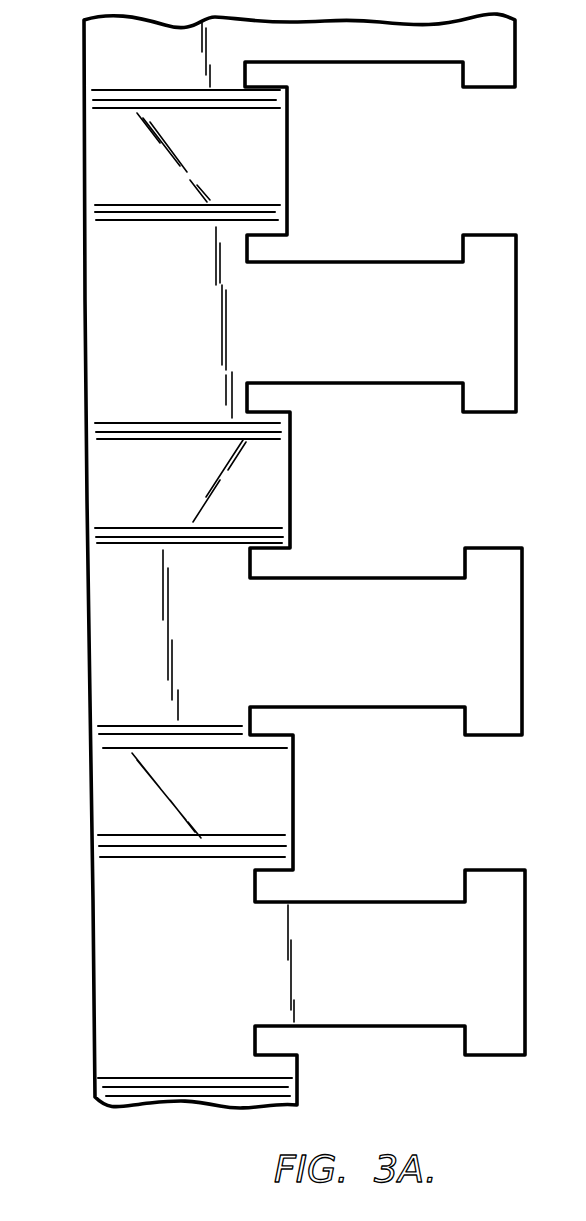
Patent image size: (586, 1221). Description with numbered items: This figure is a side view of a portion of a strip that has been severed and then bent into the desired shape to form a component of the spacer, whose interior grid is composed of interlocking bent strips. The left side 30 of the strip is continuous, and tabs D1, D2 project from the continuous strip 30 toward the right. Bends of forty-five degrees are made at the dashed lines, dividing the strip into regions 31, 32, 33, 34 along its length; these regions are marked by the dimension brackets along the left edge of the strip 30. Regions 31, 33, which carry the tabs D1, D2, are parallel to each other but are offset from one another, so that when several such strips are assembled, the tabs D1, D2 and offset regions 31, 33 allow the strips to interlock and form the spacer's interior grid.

The continuous left side of the strip 30 is at (304, 561).
The first region of the strip 31 is at (62, 222).
The second region of the strip 32 is at (63, 428).
The third region of the strip 33 is at (64, 537).
The fourth region of the strip 34 is at (85, 862).
The tab D1 is at (420, 979).
The tab D2 is at (426, 664).